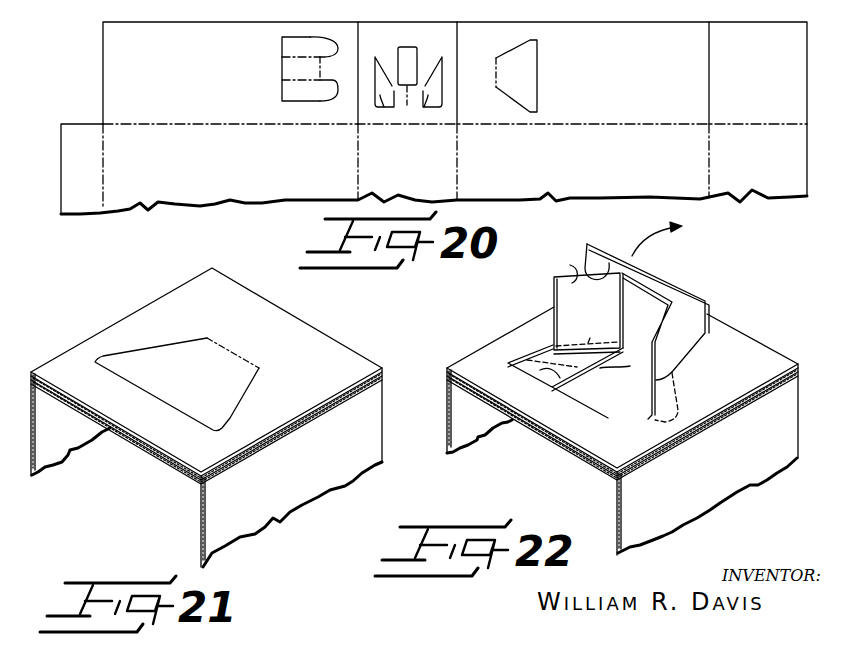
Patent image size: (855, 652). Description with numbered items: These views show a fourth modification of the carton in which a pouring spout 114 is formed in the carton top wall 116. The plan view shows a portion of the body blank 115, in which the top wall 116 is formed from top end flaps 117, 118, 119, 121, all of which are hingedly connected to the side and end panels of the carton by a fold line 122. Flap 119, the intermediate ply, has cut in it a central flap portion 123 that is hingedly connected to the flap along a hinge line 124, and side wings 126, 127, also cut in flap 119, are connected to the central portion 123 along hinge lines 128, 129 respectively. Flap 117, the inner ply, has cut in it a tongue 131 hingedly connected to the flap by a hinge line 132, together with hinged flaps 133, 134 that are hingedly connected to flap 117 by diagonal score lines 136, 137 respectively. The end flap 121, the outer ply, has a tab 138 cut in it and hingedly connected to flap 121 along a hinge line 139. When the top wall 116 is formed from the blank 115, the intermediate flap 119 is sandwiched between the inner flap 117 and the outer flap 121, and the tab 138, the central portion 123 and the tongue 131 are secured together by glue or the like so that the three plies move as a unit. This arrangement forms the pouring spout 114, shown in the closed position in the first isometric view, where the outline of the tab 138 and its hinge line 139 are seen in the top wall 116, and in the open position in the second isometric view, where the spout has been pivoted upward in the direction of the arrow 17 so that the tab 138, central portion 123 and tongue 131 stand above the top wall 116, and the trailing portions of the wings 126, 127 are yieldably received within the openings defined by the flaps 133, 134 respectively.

In FIG. 22, the direction arrow 17 is at (637, 251).
In FIG. 22, the pouring spout 114 is at (676, 268).
In FIG. 20, the blank 115 is at (238, 208).
In FIG. 21, the carton top wall 116 is at (302, 341).
In FIG. 22, the carton top wall 116 is at (746, 352).
In FIG. 20, the top end flap 117 is at (425, 34).
In FIG. 21, the top end flap 117 is at (162, 461).
In FIG. 22, the top end flap 117 is at (625, 406).
In FIG. 20, the top end flap 118 is at (756, 31).
In FIG. 20, the top end flap 119 is at (205, 33).
In FIG. 21, the top end flap 119 is at (157, 451).
In FIG. 22, the top end flap 119 is at (508, 362).
In FIG. 20, the end flap 121 is at (609, 30).
In FIG. 21, the end flap 121 is at (200, 315).
In FIG. 22, the end flap 121 is at (540, 348).
In FIG. 20, the fold line 122 is at (553, 127).
In FIG. 20, the central flap portion 123 is at (299, 63).
In FIG. 22, the central flap portion 123 is at (634, 276).
In FIG. 20, the hinge line 124 is at (321, 71).
In FIG. 20, the side wing 126 is at (306, 46).
In FIG. 22, the side wing 126 is at (572, 262).
In FIG. 20, the side wing 127 is at (306, 97).
In FIG. 22, the side wing 127 is at (688, 342).
In FIG. 20, the hinge line 128 is at (301, 54).
In FIG. 22, the hinge line 128 is at (608, 262).
In FIG. 20, the hinge line 129 is at (292, 84).
In FIG. 20, the tongue 131 is at (407, 60).
In FIG. 22, the tongue 131 is at (652, 326).
In FIG. 20, the hinge line 132 is at (414, 105).
In FIG. 22, the hinge line 132 is at (636, 368).
In FIG. 20, the hinged flap 133 is at (384, 107).
In FIG. 22, the hinged flap 133 is at (680, 387).
In FIG. 20, the hinged flap 134 is at (424, 107).
In FIG. 22, the hinged flap 134 is at (545, 370).
In FIG. 20, the diagonal score line 136 is at (384, 68).
In FIG. 20, the diagonal score line 137 is at (425, 68).
In FIG. 22, the diagonal score line 137 is at (589, 344).
In FIG. 20, the tab 138 is at (526, 69).
In FIG. 21, the tab 138 is at (202, 387).
In FIG. 22, the tab 138 is at (692, 282).
In FIG. 20, the hinge line 139 is at (485, 74).
In FIG. 21, the hinge line 139 is at (224, 344).